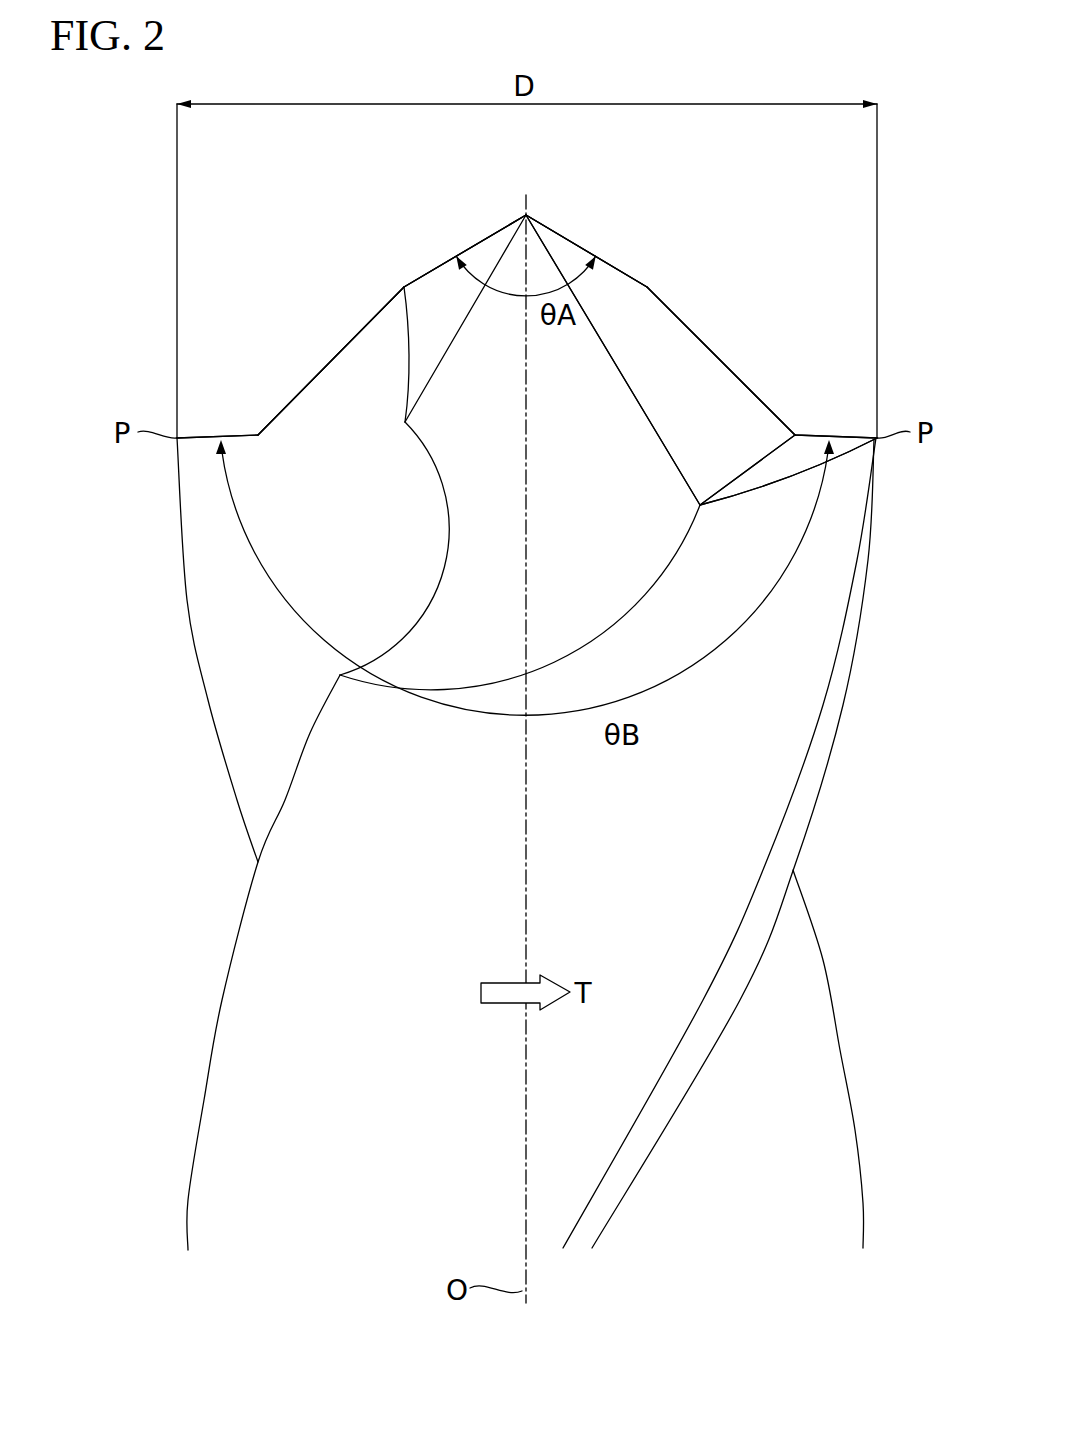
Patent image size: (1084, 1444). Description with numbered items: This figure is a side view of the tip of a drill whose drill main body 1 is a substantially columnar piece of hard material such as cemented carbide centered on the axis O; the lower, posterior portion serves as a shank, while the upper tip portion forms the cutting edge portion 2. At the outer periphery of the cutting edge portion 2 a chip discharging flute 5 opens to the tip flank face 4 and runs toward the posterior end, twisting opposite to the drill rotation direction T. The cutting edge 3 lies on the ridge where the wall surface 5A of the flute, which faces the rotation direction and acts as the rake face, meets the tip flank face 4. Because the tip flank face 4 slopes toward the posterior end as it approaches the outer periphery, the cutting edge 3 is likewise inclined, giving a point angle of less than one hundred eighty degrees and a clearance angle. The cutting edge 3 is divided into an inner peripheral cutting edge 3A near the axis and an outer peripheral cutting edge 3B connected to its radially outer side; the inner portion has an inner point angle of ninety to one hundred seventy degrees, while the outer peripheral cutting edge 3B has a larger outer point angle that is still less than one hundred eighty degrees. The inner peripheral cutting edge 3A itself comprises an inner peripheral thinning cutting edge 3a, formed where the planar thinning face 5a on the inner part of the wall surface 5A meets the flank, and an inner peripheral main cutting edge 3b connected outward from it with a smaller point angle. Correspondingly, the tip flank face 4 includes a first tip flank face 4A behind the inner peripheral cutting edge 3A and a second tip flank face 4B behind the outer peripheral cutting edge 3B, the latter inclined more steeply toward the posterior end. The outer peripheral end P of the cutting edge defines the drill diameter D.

The drill main body 1 is at (868, 730).
The cutting edge portion 2 is at (525, 962).
The cutting edge 3 is at (380, 163).
The inner peripheral cutting edge 3A is at (312, 207).
The outer peripheral cutting edge 3B is at (205, 436).
The inner peripheral thinning cutting edge 3a is at (437, 268).
The inner peripheral main cutting edge 3b is at (352, 331).
The tip flank face 4 is at (830, 322).
The first tip flank face 4A is at (720, 420).
The second tip flank face 4B is at (805, 468).
The chip discharging flute 5 is at (160, 638).
The wall surface 5A is at (207, 556).
The thinning face 5a is at (428, 330).